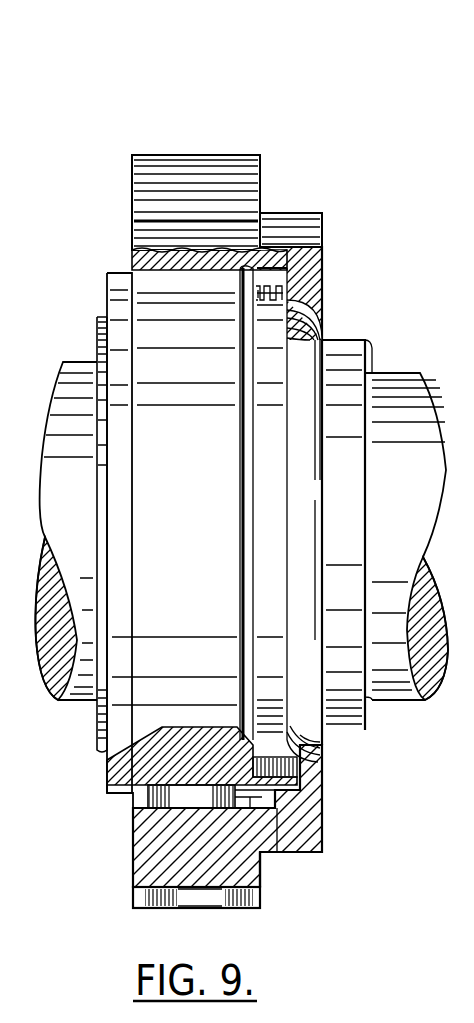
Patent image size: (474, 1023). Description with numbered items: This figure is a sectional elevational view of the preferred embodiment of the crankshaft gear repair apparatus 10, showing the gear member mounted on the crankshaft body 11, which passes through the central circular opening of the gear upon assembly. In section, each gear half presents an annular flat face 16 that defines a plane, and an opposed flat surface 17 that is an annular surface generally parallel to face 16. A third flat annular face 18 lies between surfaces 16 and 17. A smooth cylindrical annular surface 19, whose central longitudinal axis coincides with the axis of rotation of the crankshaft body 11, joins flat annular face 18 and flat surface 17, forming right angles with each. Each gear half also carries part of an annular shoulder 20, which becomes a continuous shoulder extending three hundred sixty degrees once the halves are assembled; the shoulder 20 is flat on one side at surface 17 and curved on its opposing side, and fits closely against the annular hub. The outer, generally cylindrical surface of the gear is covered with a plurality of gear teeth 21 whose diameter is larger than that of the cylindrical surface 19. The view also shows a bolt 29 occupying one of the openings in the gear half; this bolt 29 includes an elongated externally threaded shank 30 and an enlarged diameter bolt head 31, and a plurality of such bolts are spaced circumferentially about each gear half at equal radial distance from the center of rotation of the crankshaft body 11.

The crankshaft gear repair apparatus 10 is at (280, 107).
The crankshaft body 11 is at (45, 690).
The annular flat face 16 is at (133, 860).
The opposed flat surface 17 is at (323, 832).
The third flat annular face 18 is at (262, 872).
The annular surface 19 is at (300, 853).
The annular shoulder 20 is at (323, 323).
The gear teeth 21 is at (199, 155).
The bolt 29 is at (323, 797).
The externally threaded shank 30 is at (322, 742).
The bolt head 31 is at (323, 770).